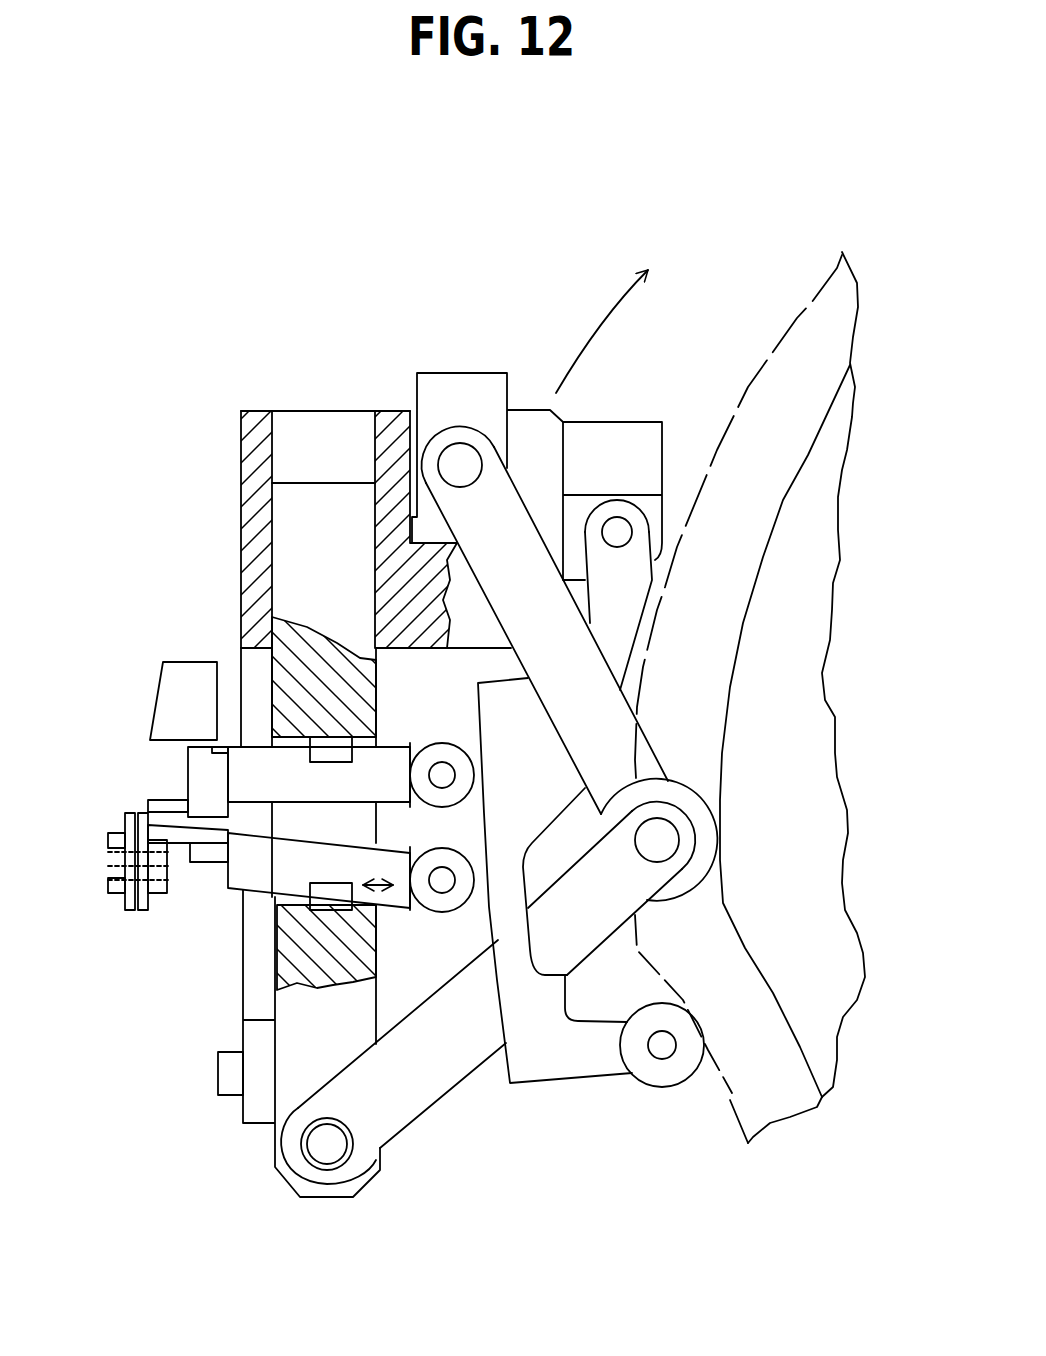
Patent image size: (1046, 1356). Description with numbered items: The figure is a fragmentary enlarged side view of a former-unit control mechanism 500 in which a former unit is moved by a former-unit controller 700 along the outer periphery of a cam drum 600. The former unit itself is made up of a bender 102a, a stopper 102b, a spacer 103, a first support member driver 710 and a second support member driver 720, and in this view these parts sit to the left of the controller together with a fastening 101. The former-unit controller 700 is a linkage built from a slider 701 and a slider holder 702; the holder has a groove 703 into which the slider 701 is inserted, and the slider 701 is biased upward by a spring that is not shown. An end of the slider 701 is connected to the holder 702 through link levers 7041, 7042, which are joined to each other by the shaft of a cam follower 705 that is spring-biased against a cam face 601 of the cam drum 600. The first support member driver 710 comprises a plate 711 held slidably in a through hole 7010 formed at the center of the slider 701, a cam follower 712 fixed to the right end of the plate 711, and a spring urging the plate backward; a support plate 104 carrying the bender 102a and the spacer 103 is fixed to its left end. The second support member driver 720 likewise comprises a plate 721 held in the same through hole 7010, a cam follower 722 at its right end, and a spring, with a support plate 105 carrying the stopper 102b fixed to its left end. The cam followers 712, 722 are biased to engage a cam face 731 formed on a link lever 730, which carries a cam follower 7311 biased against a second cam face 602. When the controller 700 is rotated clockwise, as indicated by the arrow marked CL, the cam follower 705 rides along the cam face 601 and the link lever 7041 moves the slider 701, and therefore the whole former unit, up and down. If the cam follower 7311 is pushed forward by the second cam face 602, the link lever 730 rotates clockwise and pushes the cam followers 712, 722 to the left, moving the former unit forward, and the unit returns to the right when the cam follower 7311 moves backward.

The moving device 500 is at (617, 222).
The cam drum 600 is at (768, 297).
The cam face 601 is at (808, 432).
The second cam face 602 is at (712, 458).
The former-unit controller 700 is at (460, 343).
The slider 701 is at (295, 513).
The slider holder 702 is at (390, 423).
The groove 703 is at (270, 447).
The through hole 7010 is at (360, 823).
The first support member driver 710 is at (403, 728).
The plate 711 is at (255, 768).
The cam follower 712 is at (440, 747).
The second support member driver 720 is at (400, 922).
The plate 721 is at (265, 878).
The cam follower 722 is at (455, 906).
The link lever 730 is at (548, 1045).
The cam follower 7311 is at (677, 1065).
The cam face 731 is at (480, 824).
The cam follower 705 is at (707, 853).
The link lever 7041 is at (415, 1070).
The link lever 7042 is at (500, 507).
The bolt assembly 101 is at (127, 862).
The bender 102a is at (167, 802).
The stopper 102b is at (173, 833).
The spacer 103 is at (182, 673).
The support plate 104 is at (200, 773).
The support plate 105 is at (217, 847).